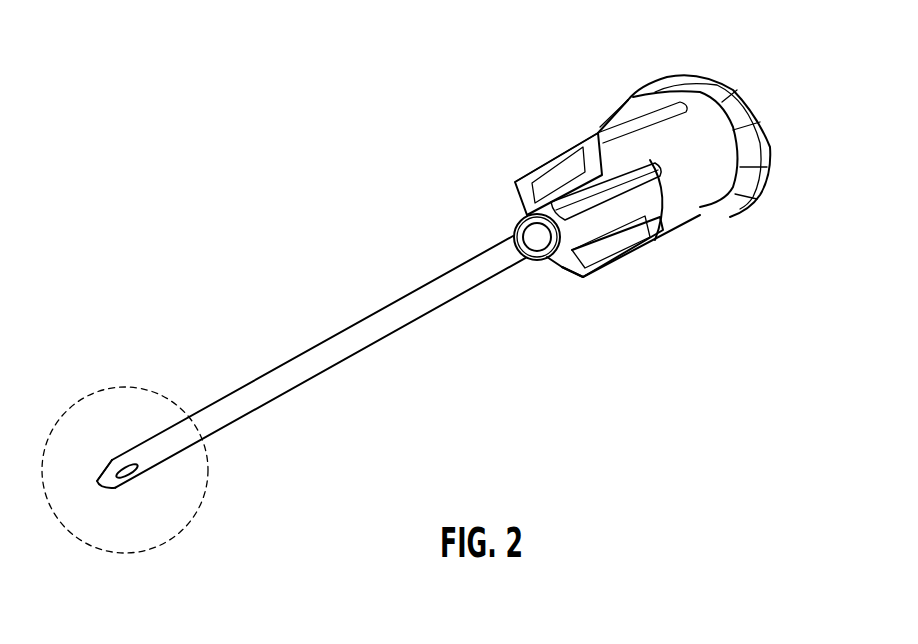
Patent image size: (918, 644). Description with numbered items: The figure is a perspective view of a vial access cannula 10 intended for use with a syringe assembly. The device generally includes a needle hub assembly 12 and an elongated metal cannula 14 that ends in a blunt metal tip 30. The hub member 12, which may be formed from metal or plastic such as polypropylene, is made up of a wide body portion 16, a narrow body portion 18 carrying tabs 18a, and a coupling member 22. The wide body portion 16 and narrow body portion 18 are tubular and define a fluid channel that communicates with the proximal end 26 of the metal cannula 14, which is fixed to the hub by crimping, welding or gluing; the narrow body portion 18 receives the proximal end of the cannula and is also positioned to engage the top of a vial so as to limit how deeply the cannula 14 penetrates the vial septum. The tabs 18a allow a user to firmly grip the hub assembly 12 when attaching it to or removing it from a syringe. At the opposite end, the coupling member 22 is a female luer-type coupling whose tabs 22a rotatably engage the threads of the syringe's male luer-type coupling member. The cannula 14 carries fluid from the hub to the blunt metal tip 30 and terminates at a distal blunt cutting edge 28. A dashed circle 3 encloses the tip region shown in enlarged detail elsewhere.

The detail circle (FIG. 3 region) 3 is at (207, 497).
The vial access cannula 10 is at (288, 258).
The needle hub assembly 12 is at (525, 108).
The elongated metal cannula 14 is at (328, 353).
The wide body portion 16 is at (698, 197).
The narrow body portion 18 is at (652, 240).
The tabs 18a is at (547, 168).
The coupling member 22 is at (758, 130).
The tabs 22a is at (615, 100).
The proximal end 26 is at (507, 244).
The distal blunt cutting edge 28 is at (105, 470).
The blunt metal tip 30 is at (118, 470).